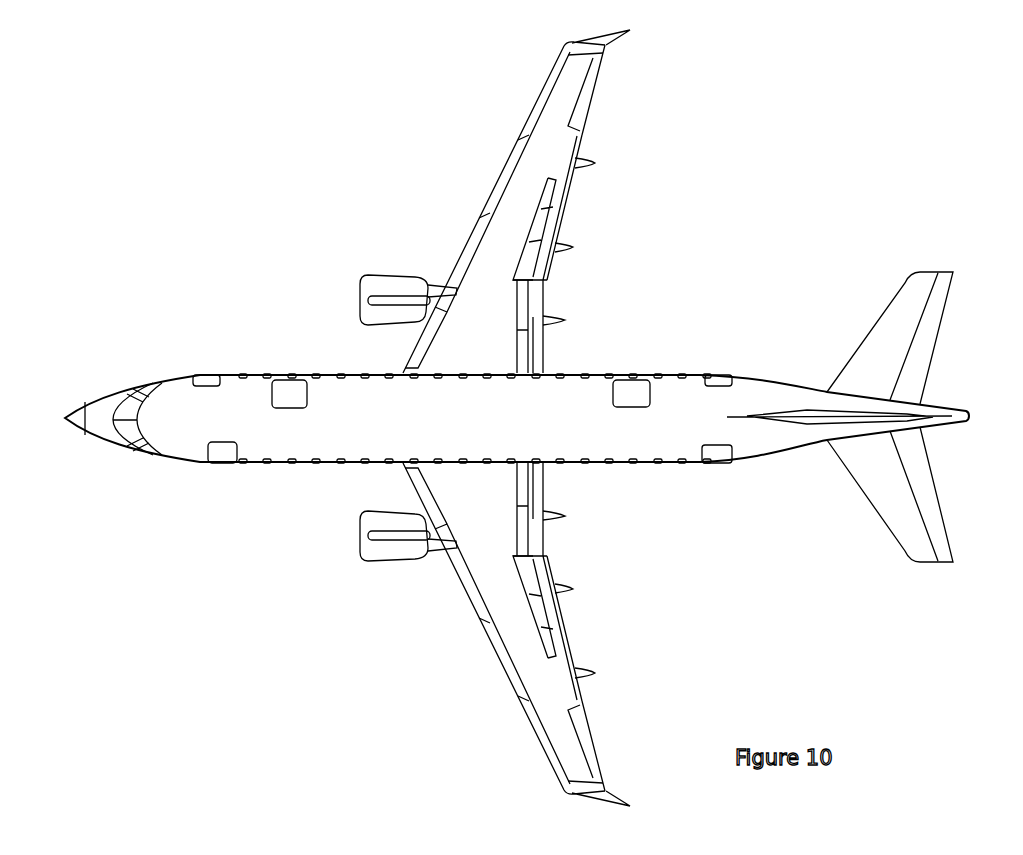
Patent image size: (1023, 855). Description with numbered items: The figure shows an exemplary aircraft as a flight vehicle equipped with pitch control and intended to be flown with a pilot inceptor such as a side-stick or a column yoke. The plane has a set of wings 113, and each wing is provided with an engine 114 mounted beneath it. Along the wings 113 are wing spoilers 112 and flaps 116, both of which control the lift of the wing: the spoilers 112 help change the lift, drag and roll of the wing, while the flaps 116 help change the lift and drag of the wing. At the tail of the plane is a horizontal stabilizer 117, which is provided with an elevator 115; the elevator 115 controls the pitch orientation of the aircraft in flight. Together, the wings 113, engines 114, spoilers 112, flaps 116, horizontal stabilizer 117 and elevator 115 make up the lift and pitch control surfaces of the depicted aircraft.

The wing spoilers 112 is at (543, 265).
The wings 113 is at (492, 307).
The engines 114 is at (372, 317).
The elevator 115 is at (928, 512).
The flaps 116 is at (543, 270).
The horizontal stabilizer 117 is at (884, 364).